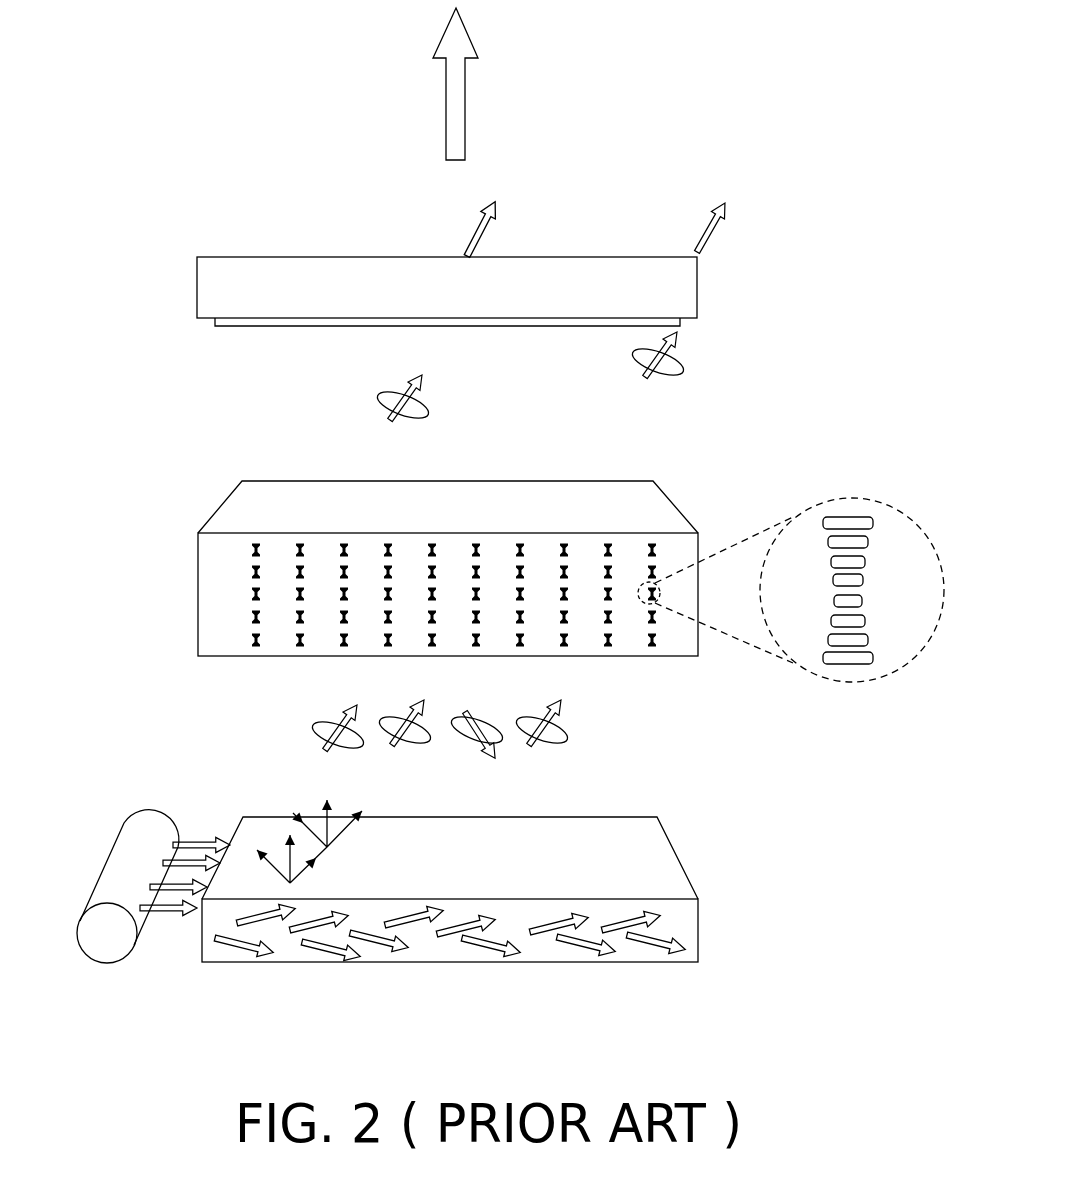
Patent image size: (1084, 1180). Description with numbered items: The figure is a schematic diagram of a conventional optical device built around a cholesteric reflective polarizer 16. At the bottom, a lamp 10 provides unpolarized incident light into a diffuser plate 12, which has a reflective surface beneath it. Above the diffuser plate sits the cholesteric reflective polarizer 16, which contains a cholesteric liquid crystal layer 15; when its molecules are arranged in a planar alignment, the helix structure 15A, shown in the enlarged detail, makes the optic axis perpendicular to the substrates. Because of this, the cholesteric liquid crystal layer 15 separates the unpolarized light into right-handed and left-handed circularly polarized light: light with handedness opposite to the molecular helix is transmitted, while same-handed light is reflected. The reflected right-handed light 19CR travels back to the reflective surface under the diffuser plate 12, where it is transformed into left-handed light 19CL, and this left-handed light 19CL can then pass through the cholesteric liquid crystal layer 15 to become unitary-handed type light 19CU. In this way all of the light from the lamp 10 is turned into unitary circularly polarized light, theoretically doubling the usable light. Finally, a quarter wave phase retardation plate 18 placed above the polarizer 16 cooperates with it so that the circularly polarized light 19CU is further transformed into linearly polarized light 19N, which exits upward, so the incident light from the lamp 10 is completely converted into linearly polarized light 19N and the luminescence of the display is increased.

The lamp 10 is at (143, 837).
The diffuser plate 12 is at (682, 920).
The cholesteric liquid crystal layer 15 is at (253, 595).
The helix structure 15A is at (845, 488).
The cholesteric reflective polarizer 16 is at (228, 473).
The ¼ wave phase retardation plate 18 is at (215, 285).
The linearly polarized light 19N is at (713, 233).
The unitary-handed type light 19CU is at (678, 343).
The left-handed light 19CL is at (560, 704).
The right-handed light 19CR is at (495, 765).